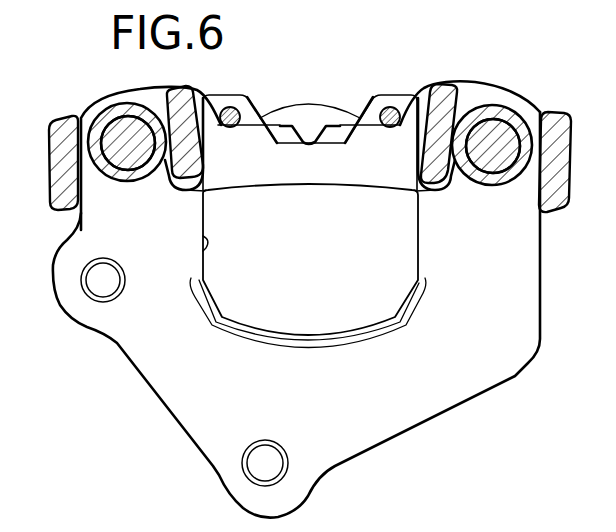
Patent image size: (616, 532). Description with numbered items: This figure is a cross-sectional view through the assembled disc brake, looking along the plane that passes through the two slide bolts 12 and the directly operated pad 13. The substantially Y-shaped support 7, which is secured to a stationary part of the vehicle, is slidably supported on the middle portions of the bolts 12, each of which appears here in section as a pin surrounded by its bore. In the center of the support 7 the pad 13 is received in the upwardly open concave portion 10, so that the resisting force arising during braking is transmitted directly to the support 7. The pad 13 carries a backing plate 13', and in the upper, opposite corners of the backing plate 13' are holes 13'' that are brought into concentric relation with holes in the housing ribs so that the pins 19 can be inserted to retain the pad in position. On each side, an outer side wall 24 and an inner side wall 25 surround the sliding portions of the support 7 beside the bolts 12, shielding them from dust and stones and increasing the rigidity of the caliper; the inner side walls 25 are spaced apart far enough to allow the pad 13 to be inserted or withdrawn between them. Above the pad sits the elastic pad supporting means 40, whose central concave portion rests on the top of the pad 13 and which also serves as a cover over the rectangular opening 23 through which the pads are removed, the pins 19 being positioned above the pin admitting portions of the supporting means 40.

The support 7 is at (60, 270).
The concave portion 10 is at (198, 252).
The bolts 12 is at (137, 122).
The pad 13 is at (308, 266).
The backing plate 13' is at (310, 142).
The holes 13'' is at (340, 99).
The pins 19 is at (230, 107).
The rectangular opening 23 is at (299, 100).
The side wall 24 is at (66, 128).
The inner side wall 25 is at (182, 100).
The pad supporting means 40 is at (298, 128).